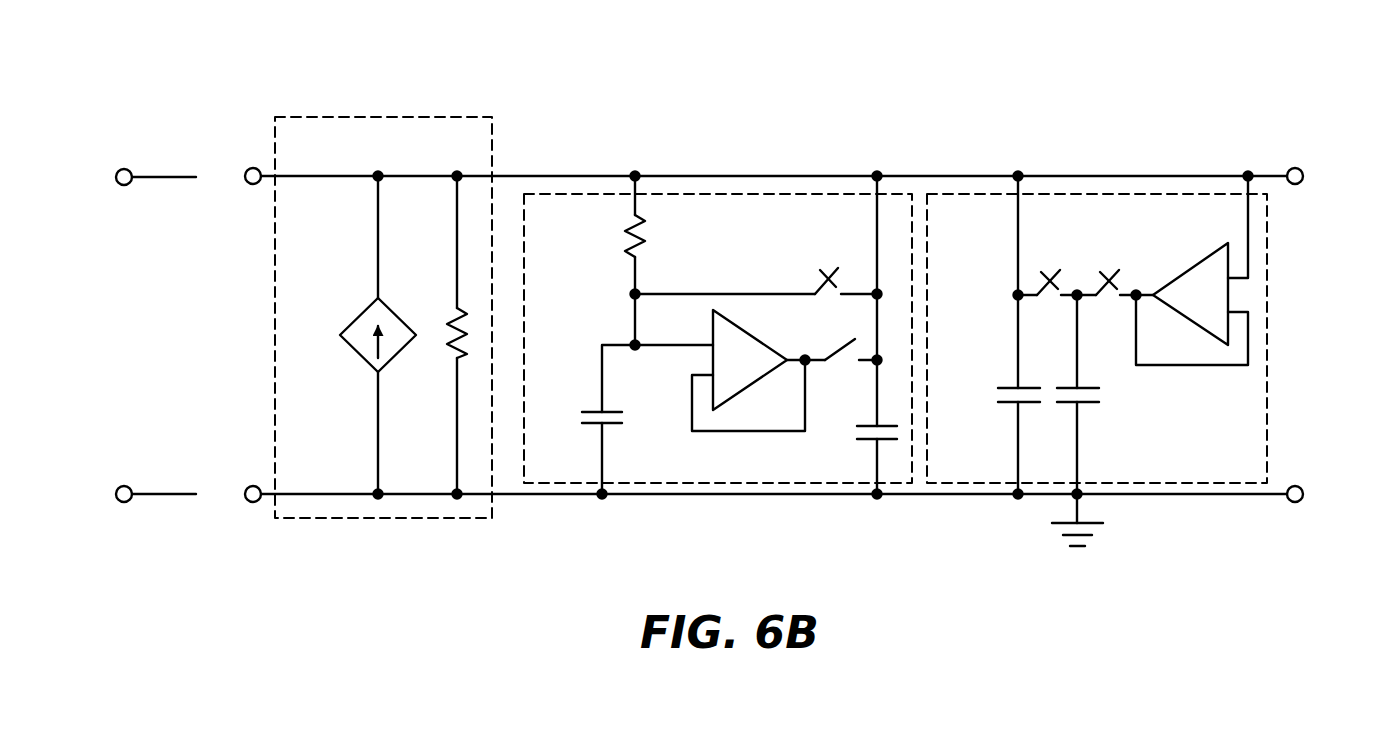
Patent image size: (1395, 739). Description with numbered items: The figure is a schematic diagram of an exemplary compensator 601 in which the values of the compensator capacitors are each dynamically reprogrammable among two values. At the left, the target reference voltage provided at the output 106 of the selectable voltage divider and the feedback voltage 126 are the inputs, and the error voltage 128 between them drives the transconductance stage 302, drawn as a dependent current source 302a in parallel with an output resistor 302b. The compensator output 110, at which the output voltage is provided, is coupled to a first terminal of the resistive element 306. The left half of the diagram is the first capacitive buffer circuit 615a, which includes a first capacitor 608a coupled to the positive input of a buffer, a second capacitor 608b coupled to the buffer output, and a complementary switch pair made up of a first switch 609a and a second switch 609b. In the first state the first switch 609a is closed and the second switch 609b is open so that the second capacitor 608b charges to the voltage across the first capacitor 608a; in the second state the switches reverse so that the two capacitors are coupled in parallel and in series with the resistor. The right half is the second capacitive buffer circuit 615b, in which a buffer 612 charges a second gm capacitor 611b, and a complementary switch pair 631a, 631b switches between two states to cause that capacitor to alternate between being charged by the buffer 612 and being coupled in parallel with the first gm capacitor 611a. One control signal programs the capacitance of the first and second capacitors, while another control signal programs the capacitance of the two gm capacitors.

The compensator 601 is at (418, 62).
The output of selectable voltage divider 106 is at (125, 168).
The feedback voltage 126 is at (124, 503).
The error voltage 128 is at (182, 346).
The transconductance amplifier model 302 is at (383, 317).
The dependent current source 302a is at (360, 318).
The output resistor Ro 302b is at (454, 310).
The resistive element 306 is at (630, 222).
The first capacitive buffer circuit 615a is at (726, 337).
The first capacitor Cc1 608a is at (597, 408).
The second capacitor Cc2 608b is at (884, 446).
The first switch 609a is at (826, 343).
The second switch 609b is at (820, 228).
The second capacitive buffer circuit 615b is at (1134, 332).
The switch of complementary switch pair 631a is at (1052, 225).
The switch of complementary switch pair 631b is at (1128, 225).
The capacitor Cgm1 611a is at (994, 384).
The capacitor Cgm2 611b is at (1104, 395).
The buffer 612 is at (1236, 371).
The compensator output 110 is at (1359, 323).